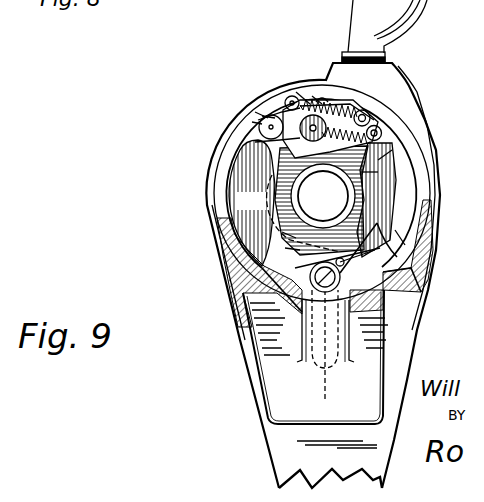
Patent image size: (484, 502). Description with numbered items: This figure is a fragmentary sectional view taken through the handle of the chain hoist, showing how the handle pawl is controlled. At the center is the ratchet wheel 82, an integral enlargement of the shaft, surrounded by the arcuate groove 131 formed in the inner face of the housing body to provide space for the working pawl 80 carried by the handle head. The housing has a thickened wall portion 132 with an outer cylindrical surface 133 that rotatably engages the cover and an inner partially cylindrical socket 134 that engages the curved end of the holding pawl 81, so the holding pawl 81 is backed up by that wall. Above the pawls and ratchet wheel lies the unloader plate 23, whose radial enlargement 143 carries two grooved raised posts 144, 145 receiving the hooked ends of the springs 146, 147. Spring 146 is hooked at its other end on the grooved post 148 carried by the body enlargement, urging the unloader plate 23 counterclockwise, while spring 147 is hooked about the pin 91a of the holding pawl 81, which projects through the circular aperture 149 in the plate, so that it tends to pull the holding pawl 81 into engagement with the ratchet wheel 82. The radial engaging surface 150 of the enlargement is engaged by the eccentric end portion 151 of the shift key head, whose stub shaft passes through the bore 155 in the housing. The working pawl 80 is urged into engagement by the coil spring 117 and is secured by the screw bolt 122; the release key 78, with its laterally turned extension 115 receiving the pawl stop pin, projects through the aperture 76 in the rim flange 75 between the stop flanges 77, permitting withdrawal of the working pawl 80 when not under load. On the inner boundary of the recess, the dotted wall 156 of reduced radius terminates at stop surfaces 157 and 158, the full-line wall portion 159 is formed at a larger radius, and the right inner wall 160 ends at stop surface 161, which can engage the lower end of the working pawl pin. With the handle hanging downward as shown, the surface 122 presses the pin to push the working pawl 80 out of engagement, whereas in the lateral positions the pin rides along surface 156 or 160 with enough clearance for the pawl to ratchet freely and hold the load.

The unloader plate 23 is at (393, 195).
The rim flange 75 is at (400, 294).
The aperture 76 is at (397, 313).
The stop flanges 77 is at (355, 345).
The release key 78 is at (327, 352).
The working pawl 80 is at (390, 267).
The holding pawl 81 is at (262, 147).
The ratchet wheel 82 is at (368, 203).
The pin 91a is at (262, 118).
The laterally turned extension 115 is at (364, 258).
The coil spring 117 is at (397, 280).
The screw bolt 122 is at (334, 290).
The arcuate groove 131 is at (230, 207).
The thickened wall portion 132 is at (315, 97).
The outer cylindrical surface 133 is at (303, 97).
The inner partially cylindrical socket 134 is at (322, 98).
The radial enlargement 143 is at (371, 118).
The raised post 144 is at (373, 112).
The raised post 145 is at (383, 132).
The spring 146 is at (357, 98).
The spring 147 is at (360, 173).
The grooved post 148 is at (287, 100).
The circular aperture 149 is at (272, 112).
The radial engaging surface 150 is at (258, 130).
The eccentric end portion 151 is at (262, 113).
The bore 155 is at (258, 122).
The wall of reduced radius 156 is at (282, 236).
The stop surface 157 is at (285, 250).
The stop surface 158 is at (252, 203).
The wall portion 159 is at (310, 276).
The inner wall right side 160 is at (397, 237).
The stop surface 161 is at (377, 167).